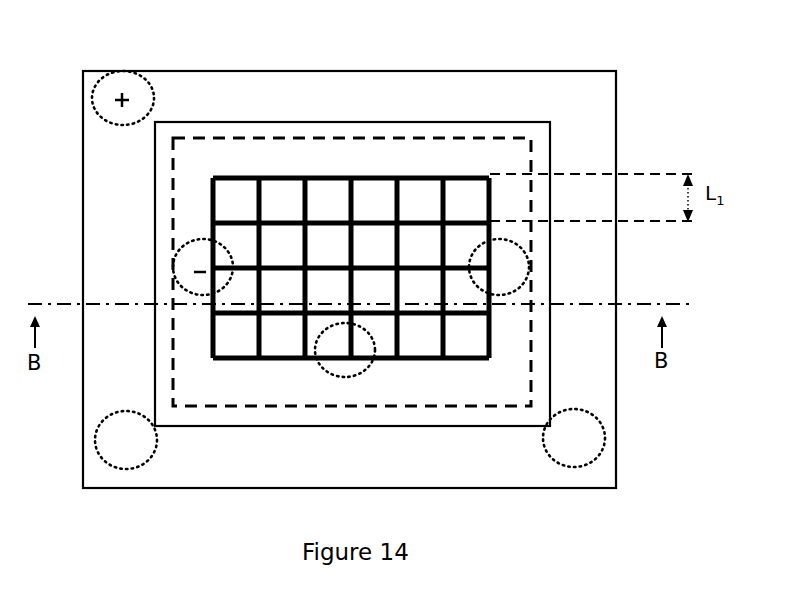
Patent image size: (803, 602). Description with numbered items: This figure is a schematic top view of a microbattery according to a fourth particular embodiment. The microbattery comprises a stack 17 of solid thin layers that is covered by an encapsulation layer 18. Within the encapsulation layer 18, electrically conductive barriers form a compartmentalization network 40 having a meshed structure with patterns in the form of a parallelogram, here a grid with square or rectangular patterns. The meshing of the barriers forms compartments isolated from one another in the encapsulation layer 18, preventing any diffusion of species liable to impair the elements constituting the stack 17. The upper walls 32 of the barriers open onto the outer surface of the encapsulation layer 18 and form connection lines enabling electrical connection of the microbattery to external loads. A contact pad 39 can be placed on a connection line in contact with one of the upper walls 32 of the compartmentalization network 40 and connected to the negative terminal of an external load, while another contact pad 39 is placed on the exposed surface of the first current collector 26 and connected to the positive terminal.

The first current collector 26 is at (260, 103).
The upper wall 32 is at (333, 172).
The contact pad 39 is at (121, 118).
The stack 17 is at (156, 201).
The encapsulation layer 18 is at (160, 258).
The compartmentalization network 40 is at (503, 358).